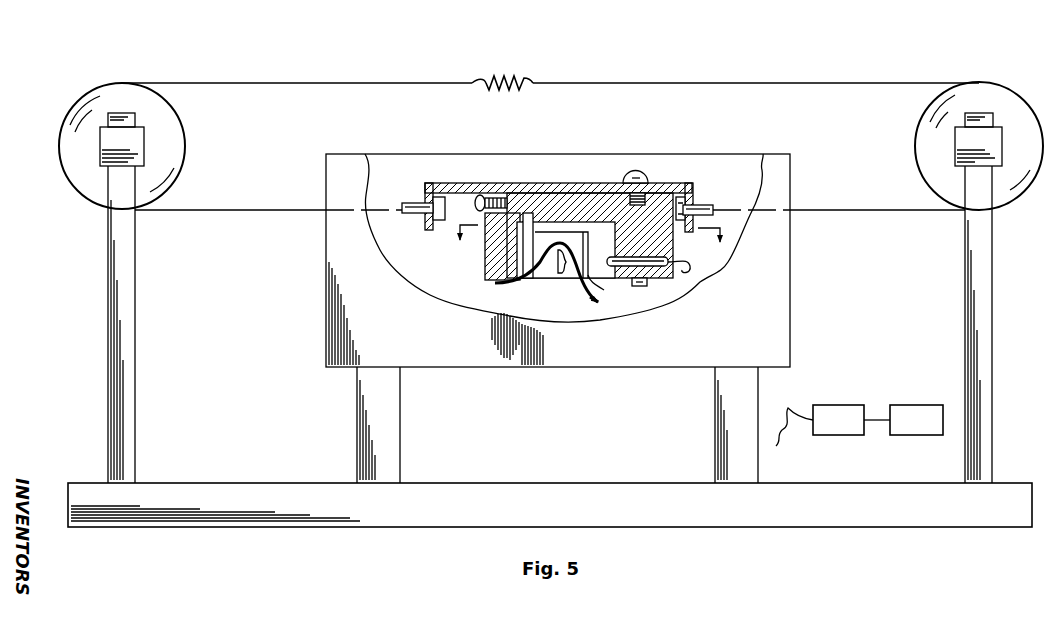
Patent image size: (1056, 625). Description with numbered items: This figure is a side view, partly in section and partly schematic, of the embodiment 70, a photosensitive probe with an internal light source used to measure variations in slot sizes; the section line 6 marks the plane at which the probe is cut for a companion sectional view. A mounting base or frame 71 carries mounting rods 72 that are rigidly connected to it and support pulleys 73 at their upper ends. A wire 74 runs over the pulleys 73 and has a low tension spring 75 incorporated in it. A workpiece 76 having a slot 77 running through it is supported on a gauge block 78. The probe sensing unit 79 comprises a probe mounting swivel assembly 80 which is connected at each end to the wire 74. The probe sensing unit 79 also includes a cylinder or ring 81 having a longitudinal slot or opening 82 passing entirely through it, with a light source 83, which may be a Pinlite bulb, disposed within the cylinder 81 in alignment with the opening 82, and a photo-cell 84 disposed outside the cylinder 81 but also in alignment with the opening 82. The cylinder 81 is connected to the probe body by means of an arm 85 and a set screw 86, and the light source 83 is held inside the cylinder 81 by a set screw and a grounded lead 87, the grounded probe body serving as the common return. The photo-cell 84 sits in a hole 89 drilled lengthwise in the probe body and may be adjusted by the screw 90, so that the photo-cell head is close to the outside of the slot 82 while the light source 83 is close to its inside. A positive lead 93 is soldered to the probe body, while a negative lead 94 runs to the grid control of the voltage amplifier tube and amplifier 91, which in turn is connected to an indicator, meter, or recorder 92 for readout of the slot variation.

The section line 6- 6 is at (590, 244).
The embodiment 70 is at (302, 484).
The mounting base 71 is at (237, 492).
The mounting rods 72 is at (110, 238).
The pulleys 73 is at (72, 164).
The wire 74 is at (185, 212).
The low tension spring 75 is at (505, 80).
The workpiece 76 is at (332, 203).
The slot 77 is at (355, 167).
The gauge block 78 is at (392, 396).
The probe sensing unit 79 is at (662, 183).
The probe mounting swivel assembly 80 is at (695, 190).
The cylinder 81 is at (572, 233).
The longitudinal slot 82 is at (606, 288).
The light source 83 is at (558, 262).
The photo-cell 84 is at (646, 286).
The arm 85 is at (500, 262).
The set screw 86 is at (488, 199).
The grounded lead 87 is at (500, 283).
The hole 89 is at (676, 268).
The screw 90 is at (598, 305).
The amplifier 91 is at (835, 408).
The indicator 92 is at (913, 412).
The positive lead 93 is at (672, 278).
The negative lead 94 is at (690, 268).